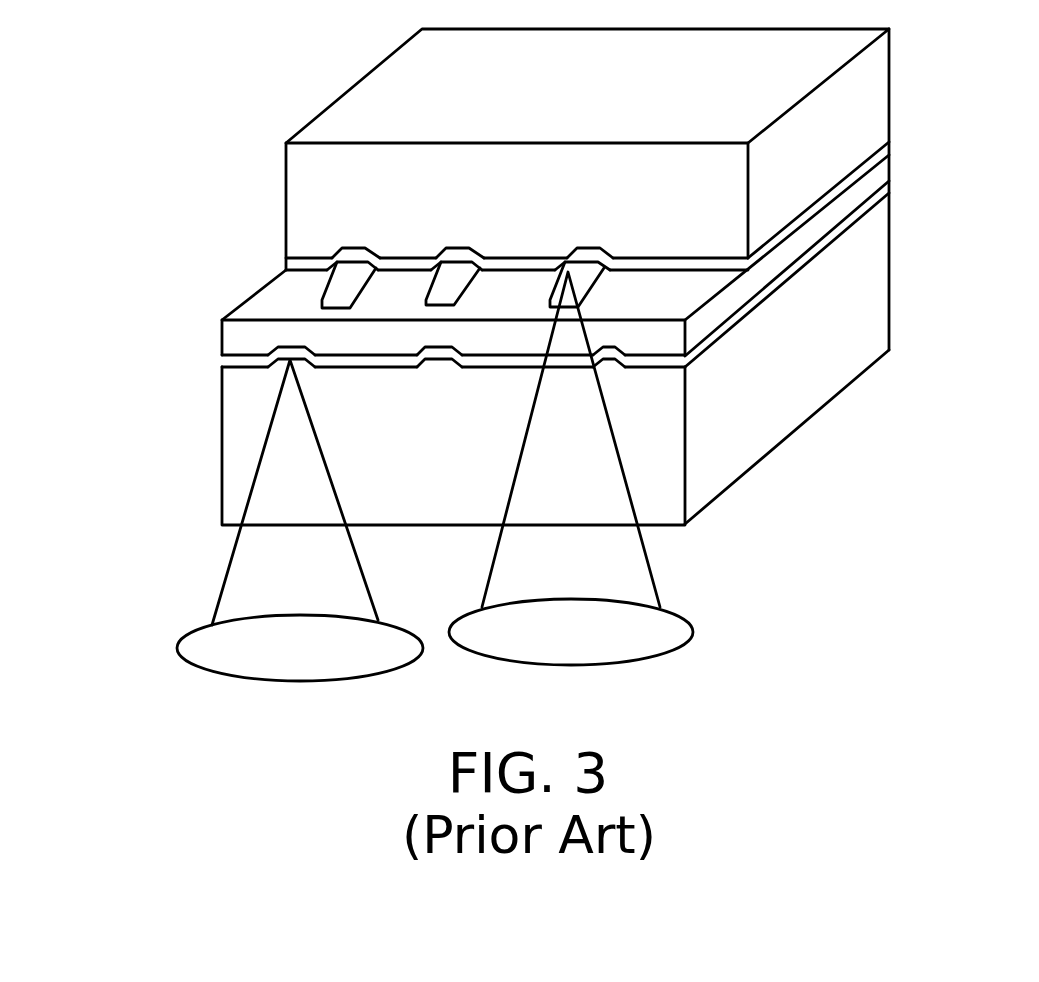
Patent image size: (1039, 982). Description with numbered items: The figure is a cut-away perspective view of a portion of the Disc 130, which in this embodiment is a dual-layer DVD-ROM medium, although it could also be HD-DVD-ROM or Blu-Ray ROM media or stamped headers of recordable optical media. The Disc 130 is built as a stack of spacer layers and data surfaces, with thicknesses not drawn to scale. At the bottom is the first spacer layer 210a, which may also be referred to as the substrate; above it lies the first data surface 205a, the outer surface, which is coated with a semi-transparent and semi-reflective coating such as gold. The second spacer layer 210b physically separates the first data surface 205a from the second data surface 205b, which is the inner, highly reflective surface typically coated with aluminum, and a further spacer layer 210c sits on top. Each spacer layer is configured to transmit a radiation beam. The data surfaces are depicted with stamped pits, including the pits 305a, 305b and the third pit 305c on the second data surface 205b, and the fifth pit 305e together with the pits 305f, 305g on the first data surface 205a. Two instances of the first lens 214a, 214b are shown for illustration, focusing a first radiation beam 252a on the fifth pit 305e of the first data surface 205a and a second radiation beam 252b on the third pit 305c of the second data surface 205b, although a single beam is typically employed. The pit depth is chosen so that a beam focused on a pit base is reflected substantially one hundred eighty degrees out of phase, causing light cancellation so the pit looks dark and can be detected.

The Disc 130 is at (78, 66).
The spacer layer 210c is at (285, 142).
The second data surface 205b is at (285, 263).
The second spacer layer 210b is at (222, 320).
The first data surface 205a is at (222, 365).
The first spacer layer 210a is at (222, 462).
The pit 305a is at (385, 257).
The pit 305b is at (488, 257).
The third pit 305c is at (618, 258).
The fifth pit 305e is at (297, 373).
The pit 305f is at (440, 360).
The pit 305g is at (612, 366).
The first radiation beam 252a is at (222, 573).
The second radiation beam 252b is at (647, 550).
The first lens 214a is at (208, 672).
The first lens 214b is at (665, 653).